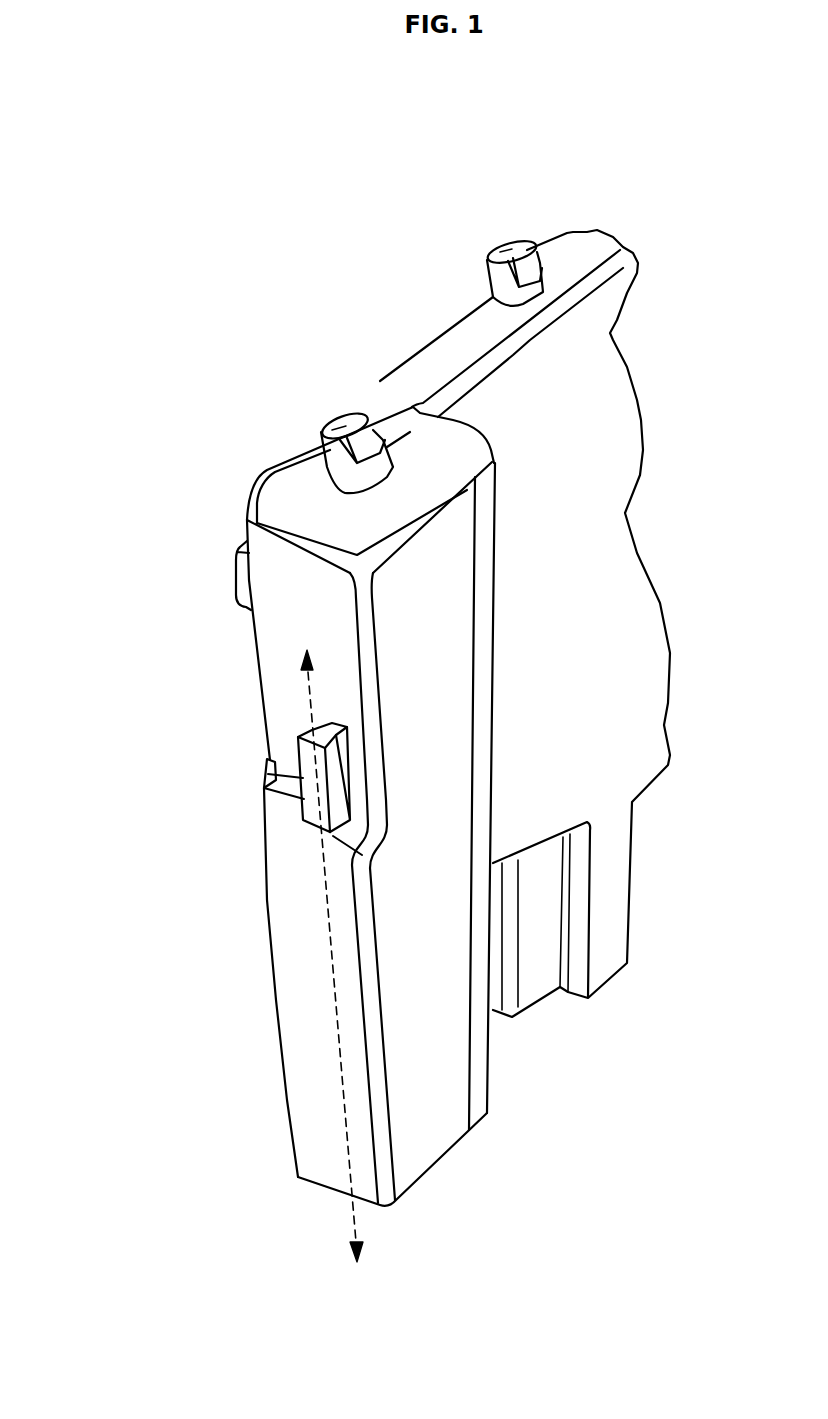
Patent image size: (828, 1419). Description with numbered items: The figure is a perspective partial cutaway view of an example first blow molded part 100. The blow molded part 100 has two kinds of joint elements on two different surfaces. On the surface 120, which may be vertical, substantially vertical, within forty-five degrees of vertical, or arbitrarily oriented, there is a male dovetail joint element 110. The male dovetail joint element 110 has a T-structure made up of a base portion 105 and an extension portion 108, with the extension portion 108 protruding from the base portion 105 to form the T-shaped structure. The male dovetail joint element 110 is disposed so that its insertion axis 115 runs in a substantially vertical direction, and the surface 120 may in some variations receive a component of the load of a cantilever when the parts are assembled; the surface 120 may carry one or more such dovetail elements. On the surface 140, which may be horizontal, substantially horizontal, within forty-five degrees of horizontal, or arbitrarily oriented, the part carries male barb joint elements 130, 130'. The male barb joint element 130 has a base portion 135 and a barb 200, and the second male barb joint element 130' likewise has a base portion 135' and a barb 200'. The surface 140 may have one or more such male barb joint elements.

The first blow molded part 100 is at (247, 207).
The base portion 105 is at (310, 728).
The extension portion 108 is at (315, 802).
The male dovetail joint element 110 is at (302, 777).
The insertion axis 115 is at (350, 1230).
The surface 120 is at (290, 612).
The male barb joint element 130 is at (357, 363).
The base portion 135 is at (323, 433).
The surface 140 is at (288, 487).
The barb 200 is at (500, 319).
The barb 200' is at (581, 541).
The male barb joint element 130' is at (525, 186).
The base portion 135' is at (488, 234).